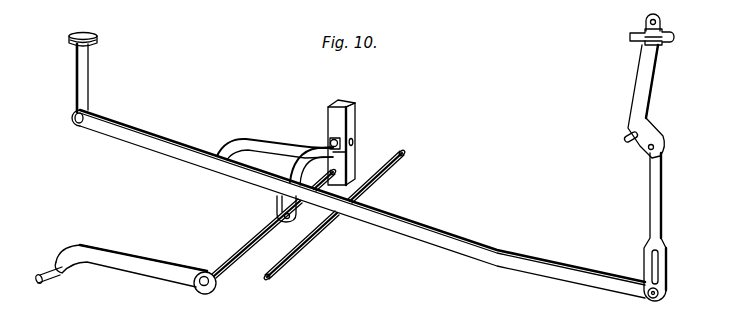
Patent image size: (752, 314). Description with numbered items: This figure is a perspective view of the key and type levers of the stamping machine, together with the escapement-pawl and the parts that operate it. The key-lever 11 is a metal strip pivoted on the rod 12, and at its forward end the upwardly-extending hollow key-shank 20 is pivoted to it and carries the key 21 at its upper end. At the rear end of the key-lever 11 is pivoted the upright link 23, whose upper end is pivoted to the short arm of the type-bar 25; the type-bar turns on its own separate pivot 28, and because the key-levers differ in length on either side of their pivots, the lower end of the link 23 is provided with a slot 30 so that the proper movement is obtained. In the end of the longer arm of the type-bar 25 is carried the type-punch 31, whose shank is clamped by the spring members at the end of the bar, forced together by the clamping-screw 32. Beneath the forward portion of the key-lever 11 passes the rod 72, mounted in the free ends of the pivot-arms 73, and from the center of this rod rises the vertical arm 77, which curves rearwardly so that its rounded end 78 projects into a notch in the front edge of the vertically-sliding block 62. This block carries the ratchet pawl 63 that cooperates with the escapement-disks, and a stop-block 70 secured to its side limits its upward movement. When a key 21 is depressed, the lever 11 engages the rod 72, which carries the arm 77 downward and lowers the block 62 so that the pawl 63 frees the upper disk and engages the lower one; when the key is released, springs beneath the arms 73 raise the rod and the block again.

The key-lever 11 is at (409, 224).
The rod 12 is at (291, 258).
The hollow key-shank 20 is at (88, 84).
The key 21 is at (92, 39).
The upright link 23 is at (656, 198).
The type-bar 25 is at (648, 86).
The pivot 28 is at (640, 146).
The slot 30 is at (659, 266).
The type-punch 31 is at (637, 33).
The clamping-screw 32 is at (661, 19).
The vertically-sliding block 62 is at (351, 113).
The ratchet pawl 63 is at (354, 140).
The stop-block 70 is at (331, 141).
The rod 72 is at (257, 237).
The pivot-arm 73 is at (147, 266).
The vertical arm 77 is at (296, 166).
The rounded end 78 is at (346, 153).